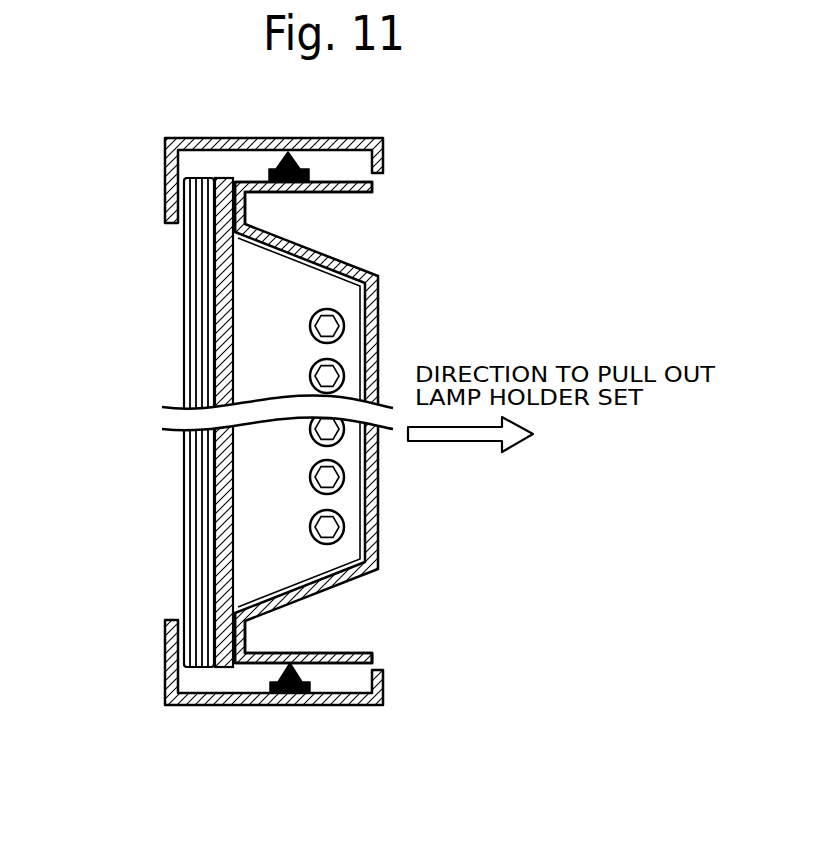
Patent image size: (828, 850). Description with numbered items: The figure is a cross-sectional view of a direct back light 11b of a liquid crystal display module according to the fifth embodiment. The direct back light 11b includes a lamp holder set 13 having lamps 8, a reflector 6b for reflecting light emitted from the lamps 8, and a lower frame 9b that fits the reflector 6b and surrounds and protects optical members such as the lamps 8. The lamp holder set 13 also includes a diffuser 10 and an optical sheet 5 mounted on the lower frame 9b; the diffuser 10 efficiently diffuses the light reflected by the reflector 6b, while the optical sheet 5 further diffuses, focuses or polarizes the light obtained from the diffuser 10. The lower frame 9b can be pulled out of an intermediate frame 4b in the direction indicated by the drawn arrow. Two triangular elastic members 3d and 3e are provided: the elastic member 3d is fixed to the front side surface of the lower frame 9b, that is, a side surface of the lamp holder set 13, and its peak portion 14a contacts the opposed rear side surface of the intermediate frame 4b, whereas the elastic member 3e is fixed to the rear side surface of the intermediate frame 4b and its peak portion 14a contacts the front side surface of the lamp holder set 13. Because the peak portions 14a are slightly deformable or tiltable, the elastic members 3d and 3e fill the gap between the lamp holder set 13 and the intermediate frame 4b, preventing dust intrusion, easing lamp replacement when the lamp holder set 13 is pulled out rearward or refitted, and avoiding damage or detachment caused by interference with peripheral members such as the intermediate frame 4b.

The peak portion 14a is at (293, 160).
The elastic member 3d is at (293, 192).
The elastic member 3e is at (293, 693).
The optical sheet 5 is at (190, 308).
The diffuser 10 is at (222, 365).
The lamps 8 is at (343, 323).
The lamp holder set 13 is at (385, 477).
The reflector 6b is at (323, 572).
The lower frame 9b is at (363, 651).
The intermediate frame 4b is at (343, 705).
The direct back light 11b is at (150, 708).